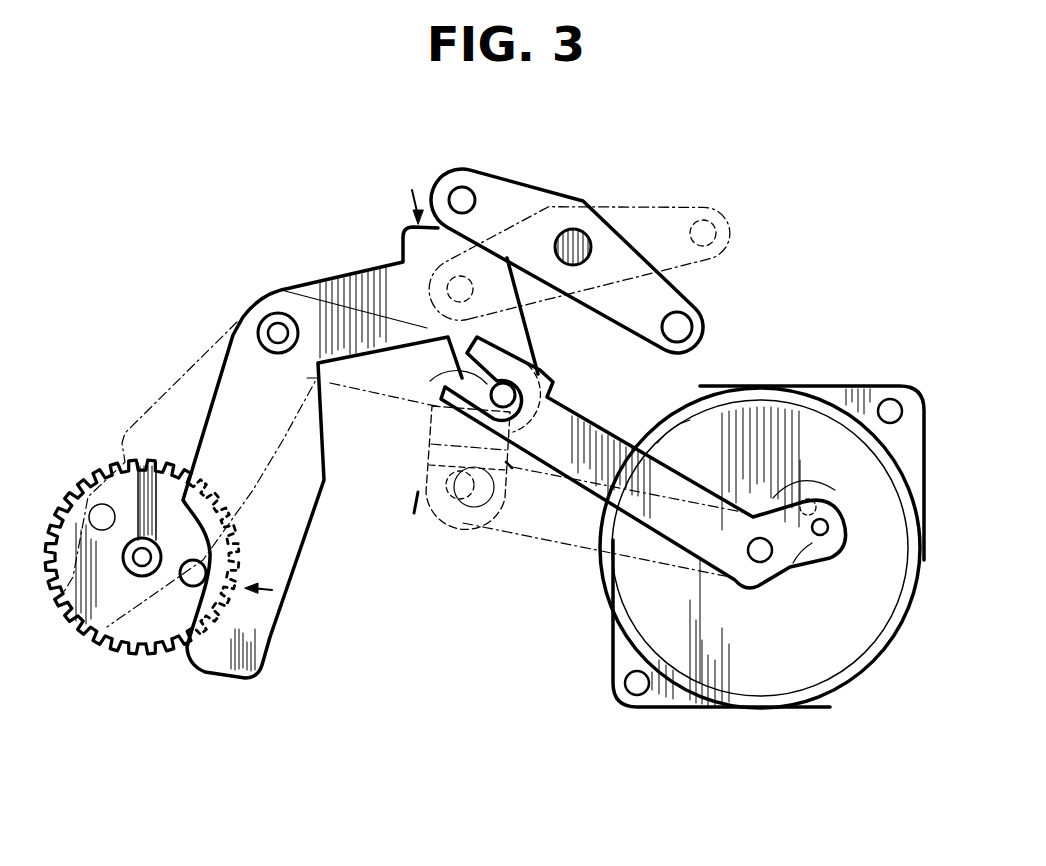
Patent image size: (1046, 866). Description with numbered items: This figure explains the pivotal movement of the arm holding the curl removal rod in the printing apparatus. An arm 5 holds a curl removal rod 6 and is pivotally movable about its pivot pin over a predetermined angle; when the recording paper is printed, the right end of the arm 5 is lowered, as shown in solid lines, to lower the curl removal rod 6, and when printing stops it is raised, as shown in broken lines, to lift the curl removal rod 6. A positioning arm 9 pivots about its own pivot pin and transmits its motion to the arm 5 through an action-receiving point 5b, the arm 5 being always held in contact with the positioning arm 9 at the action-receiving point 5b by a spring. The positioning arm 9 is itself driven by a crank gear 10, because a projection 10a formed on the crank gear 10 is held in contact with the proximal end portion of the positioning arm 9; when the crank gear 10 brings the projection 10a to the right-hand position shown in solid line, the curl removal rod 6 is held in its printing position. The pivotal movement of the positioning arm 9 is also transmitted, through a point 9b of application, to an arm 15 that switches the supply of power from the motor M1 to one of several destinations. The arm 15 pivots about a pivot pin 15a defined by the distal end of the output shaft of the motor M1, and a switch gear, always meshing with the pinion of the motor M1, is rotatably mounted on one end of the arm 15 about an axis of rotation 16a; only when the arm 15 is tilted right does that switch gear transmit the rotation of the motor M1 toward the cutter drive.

The arm 5 is at (527, 200).
The action-receiving point 5b is at (462, 196).
The curl removal rod 6 is at (692, 326).
The positioning arm 9 is at (366, 268).
The point of application 9b is at (430, 406).
The crank gear 10 is at (130, 637).
The projection 10a is at (262, 640).
The arm 15 is at (600, 440).
The pivot pin 15a is at (760, 562).
The axis of rotation of the switch gear 16a is at (822, 535).
The motor M1 is at (635, 594).